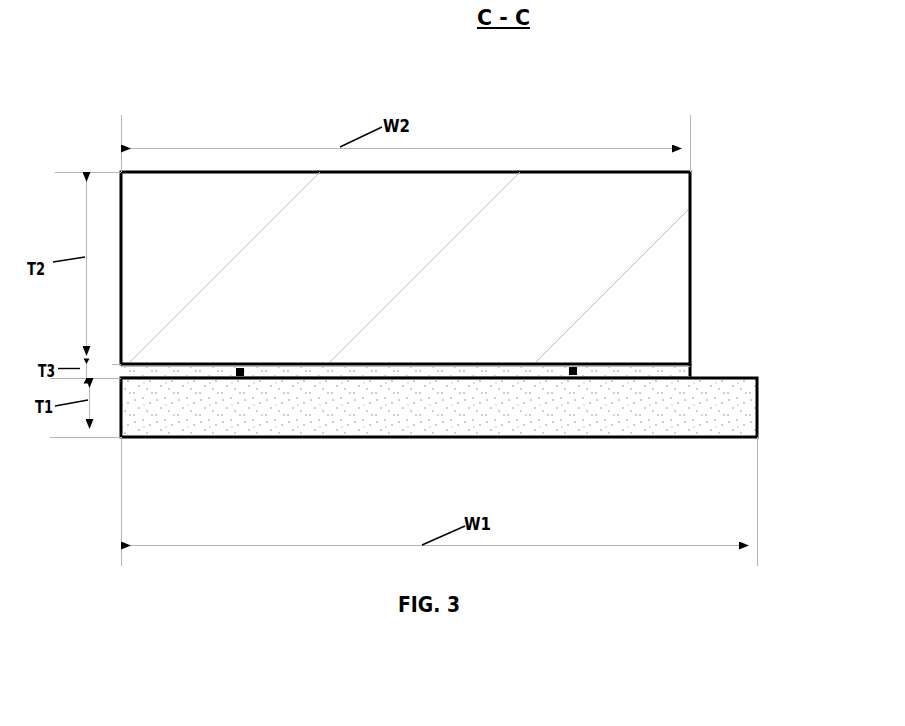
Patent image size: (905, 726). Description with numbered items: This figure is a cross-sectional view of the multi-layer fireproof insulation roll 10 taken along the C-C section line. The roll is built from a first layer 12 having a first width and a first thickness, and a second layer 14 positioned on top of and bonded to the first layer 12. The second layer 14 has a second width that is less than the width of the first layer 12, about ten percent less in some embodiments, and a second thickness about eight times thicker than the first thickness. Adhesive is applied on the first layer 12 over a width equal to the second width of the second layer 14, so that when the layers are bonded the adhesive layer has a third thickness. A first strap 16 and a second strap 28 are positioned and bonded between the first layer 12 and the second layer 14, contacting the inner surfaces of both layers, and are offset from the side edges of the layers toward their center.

The multi-layer fireproof insulation roll 10 is at (290, 59).
The first layer 12 is at (743, 400).
The second layer 14 is at (677, 265).
The first strap 16 is at (240, 378).
The second strap 28 is at (618, 362).